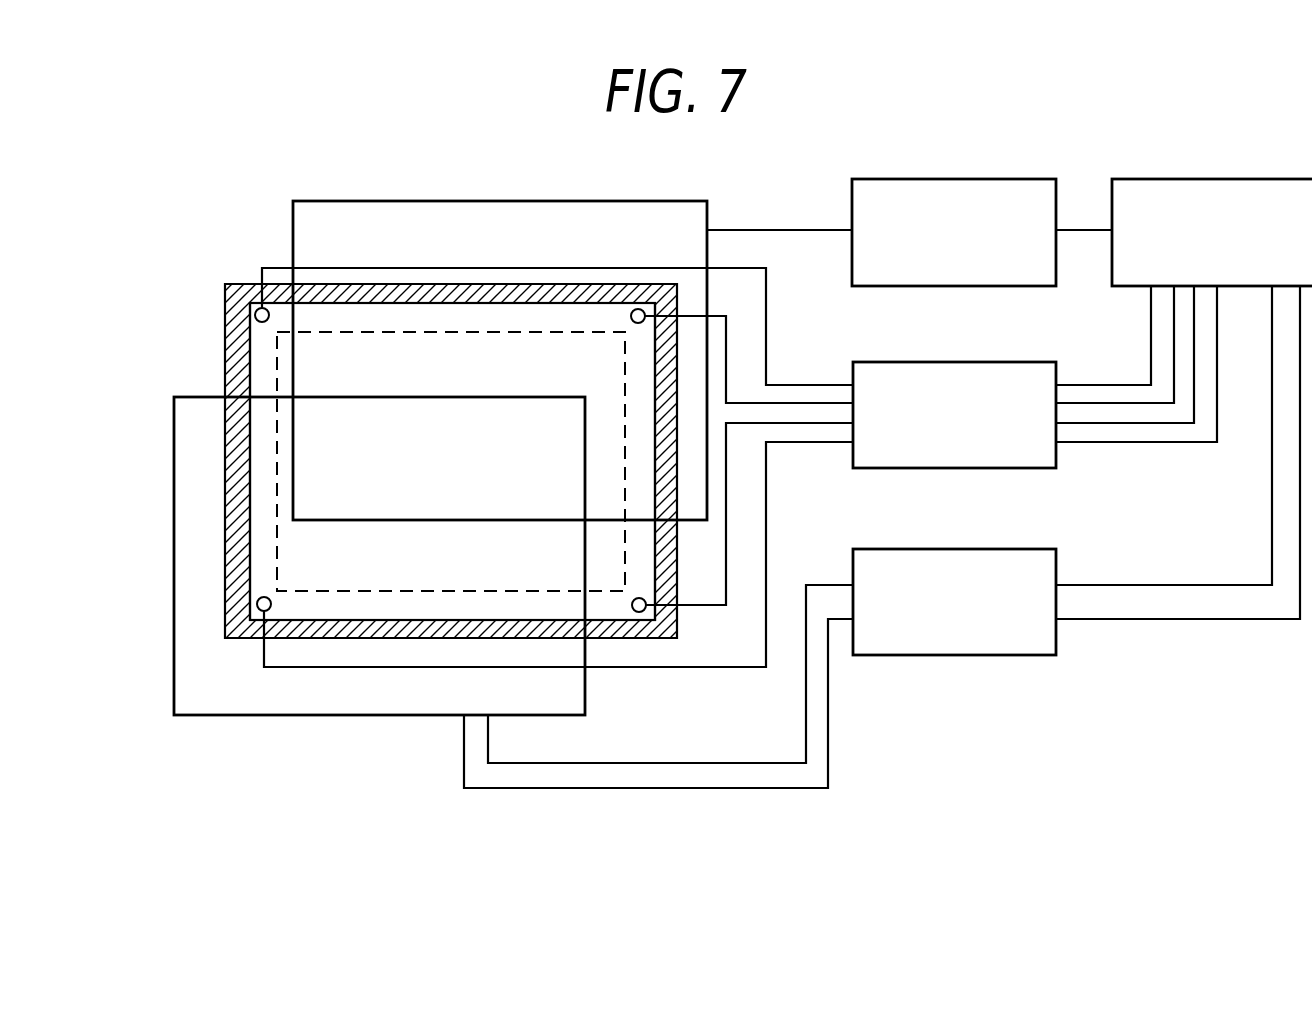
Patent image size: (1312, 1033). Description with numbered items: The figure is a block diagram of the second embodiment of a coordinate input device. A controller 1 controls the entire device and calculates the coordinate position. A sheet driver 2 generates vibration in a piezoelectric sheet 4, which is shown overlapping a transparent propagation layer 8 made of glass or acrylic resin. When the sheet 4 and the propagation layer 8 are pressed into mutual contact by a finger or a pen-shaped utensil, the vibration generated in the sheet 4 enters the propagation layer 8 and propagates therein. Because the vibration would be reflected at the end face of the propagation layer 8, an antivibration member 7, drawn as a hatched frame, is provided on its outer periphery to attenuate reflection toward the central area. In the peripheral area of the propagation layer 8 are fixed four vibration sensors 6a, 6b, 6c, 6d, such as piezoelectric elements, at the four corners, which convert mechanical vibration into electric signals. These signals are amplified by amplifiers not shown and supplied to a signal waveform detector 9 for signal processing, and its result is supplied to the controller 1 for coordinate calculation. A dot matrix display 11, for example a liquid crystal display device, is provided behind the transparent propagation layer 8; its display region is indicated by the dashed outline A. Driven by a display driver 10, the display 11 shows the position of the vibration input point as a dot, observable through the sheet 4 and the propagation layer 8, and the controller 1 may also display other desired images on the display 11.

The controller 1 is at (1273, 179).
The sheet driver 2 is at (1008, 179).
The piezoelectric sheet 4 is at (636, 201).
The vibration sensor 6a is at (268, 320).
The vibration sensor 6b is at (632, 322).
The vibration sensor 6c is at (269, 598).
The vibration sensor 6d is at (632, 600).
The antivibration member 7 is at (225, 314).
The propagation layer 8 is at (260, 362).
The signal waveform detector 9 is at (1013, 362).
The display driver 10 is at (1001, 549).
The dot matrix display 11 is at (404, 715).
The display area A is at (350, 591).